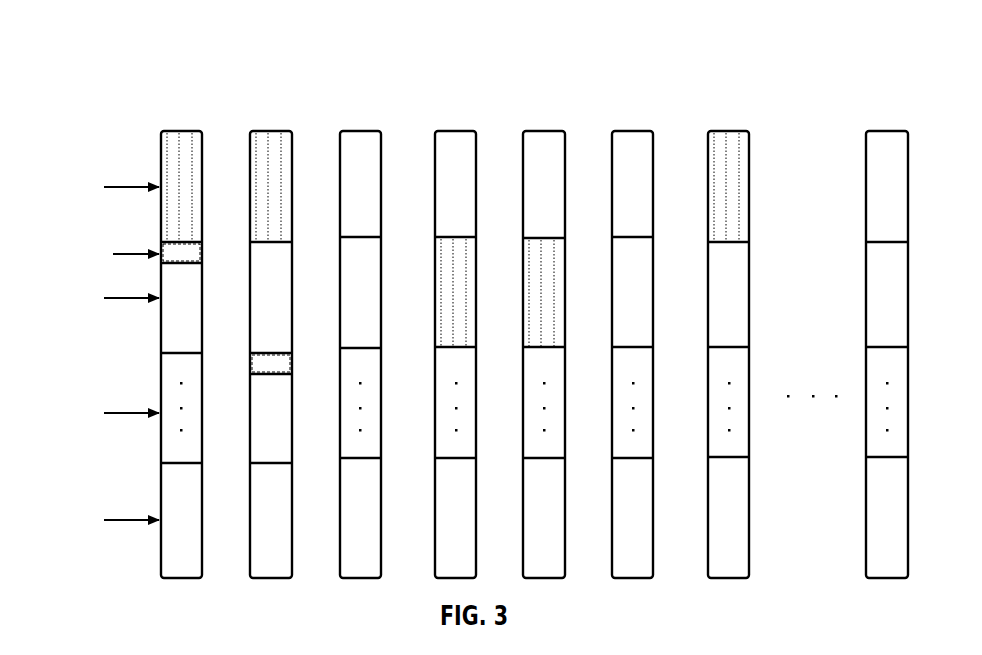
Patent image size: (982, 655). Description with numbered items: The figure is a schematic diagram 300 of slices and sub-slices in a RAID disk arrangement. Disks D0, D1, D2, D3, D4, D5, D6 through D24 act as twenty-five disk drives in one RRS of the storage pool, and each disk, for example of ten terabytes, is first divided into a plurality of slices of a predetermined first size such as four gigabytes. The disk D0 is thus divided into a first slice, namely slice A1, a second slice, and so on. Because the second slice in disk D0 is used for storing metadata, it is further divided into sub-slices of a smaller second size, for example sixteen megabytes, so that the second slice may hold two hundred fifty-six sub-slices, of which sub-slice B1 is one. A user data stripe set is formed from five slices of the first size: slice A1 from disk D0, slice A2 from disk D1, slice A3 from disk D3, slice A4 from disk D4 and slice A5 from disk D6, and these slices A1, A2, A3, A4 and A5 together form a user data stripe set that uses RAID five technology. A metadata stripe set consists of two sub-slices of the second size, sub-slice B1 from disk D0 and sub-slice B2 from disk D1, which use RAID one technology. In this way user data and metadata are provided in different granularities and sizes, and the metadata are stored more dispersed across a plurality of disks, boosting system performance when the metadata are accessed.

The schematic diagram 300 is at (113, 40).
The disk D0 is at (181, 336).
The disk D1 is at (271, 336).
The disk D2 is at (360, 336).
The disk D3 is at (455, 336).
The disk D4 is at (544, 336).
The disk D5 is at (632, 336).
The disk D6 is at (728, 336).
The disk D24 is at (887, 336).
The slice A1 is at (180, 187).
The slice A2 is at (269, 187).
The slice A3 is at (454, 292).
The slice A4 is at (542, 293).
The slice A5 is at (727, 187).
The sub-slice B1 is at (181, 252).
The sub-slice B2 is at (271, 363).